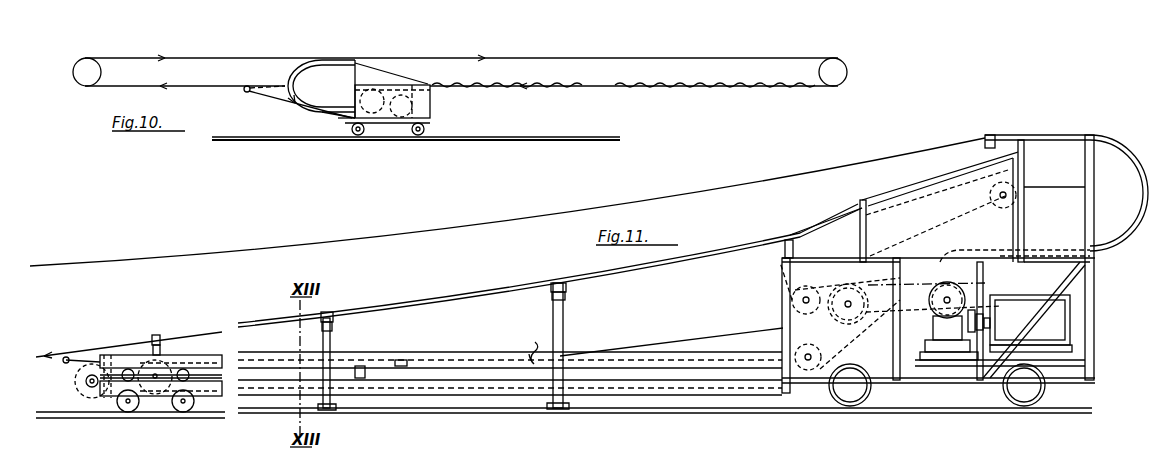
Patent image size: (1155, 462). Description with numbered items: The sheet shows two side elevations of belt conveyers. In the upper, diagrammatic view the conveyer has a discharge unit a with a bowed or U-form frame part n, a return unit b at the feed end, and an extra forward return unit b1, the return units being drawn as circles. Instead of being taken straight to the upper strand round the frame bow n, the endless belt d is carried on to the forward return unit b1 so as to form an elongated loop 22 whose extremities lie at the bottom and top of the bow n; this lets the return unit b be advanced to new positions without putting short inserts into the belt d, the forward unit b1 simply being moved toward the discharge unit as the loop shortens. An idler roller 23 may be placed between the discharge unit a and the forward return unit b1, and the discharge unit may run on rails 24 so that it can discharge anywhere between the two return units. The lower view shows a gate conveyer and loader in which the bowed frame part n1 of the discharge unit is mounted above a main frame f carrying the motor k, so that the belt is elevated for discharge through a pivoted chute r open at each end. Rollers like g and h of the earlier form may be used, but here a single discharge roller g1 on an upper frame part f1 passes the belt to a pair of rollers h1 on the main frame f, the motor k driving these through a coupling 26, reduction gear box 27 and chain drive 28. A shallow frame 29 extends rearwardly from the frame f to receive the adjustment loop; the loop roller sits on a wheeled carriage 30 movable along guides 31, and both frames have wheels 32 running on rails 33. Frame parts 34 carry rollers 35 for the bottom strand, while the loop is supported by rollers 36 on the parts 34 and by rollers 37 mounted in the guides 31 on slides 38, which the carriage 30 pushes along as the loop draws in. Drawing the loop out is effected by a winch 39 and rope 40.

In FIG. 10, the elongated loop 22 is at (158, 60).
In FIG. 11, the elongated loop 22 is at (410, 362).
In FIG. 10, the idler roller 23 is at (240, 92).
In FIG. 10, the rails 24 is at (290, 136).
In FIG. 11, the coupling 26 is at (975, 332).
In FIG. 11, the reduction gear box 27 is at (947, 335).
In FIG. 11, the chain drive 28 is at (937, 316).
In FIG. 11, the shallow frame 29 is at (497, 353).
In FIG. 11, the wheeled carriage 30 is at (152, 380).
In FIG. 11, the guides 31 is at (525, 348).
In FIG. 11, the wheels 32 is at (126, 412).
In FIG. 11, the rails 33 is at (462, 398).
In FIG. 11, the frame parts 34 is at (332, 340).
In FIG. 11, the rollers 35 is at (443, 296).
In FIG. 11, the rollers 36 is at (328, 410).
In FIG. 11, the rollers 37 is at (362, 364).
In FIG. 11, the slides 38 is at (403, 360).
In FIG. 11, the winch 39 is at (82, 382).
In FIG. 11, the rope 40 is at (120, 362).
In FIG. 10, the discharge unit a is at (321, 89).
In FIG. 11, the discharge unit a is at (921, 295).
In FIG. 10, the return unit b is at (818, 72).
In FIG. 10, the forward return unit b1 is at (85, 84).
In FIG. 11, the forward return unit b1 is at (152, 390).
In FIG. 10, the endless belt d is at (700, 84).
In FIG. 11, the endless belt d is at (348, 245).
In FIG. 11, the main frame f is at (1102, 322).
In FIG. 11, the upper frame part f1 is at (898, 196).
In FIG. 10, the roller g is at (398, 88).
In FIG. 11, the discharge roller g1 is at (904, 207).
In FIG. 10, the roller h is at (432, 108).
In FIG. 11, the rollers h1 is at (796, 262).
In FIG. 11, the motor k is at (1031, 323).
In FIG. 10, the frame bow n is at (288, 78).
In FIG. 11, the bowed frame part n1 is at (1055, 140).
In FIG. 11, the discharge chute r is at (1044, 257).